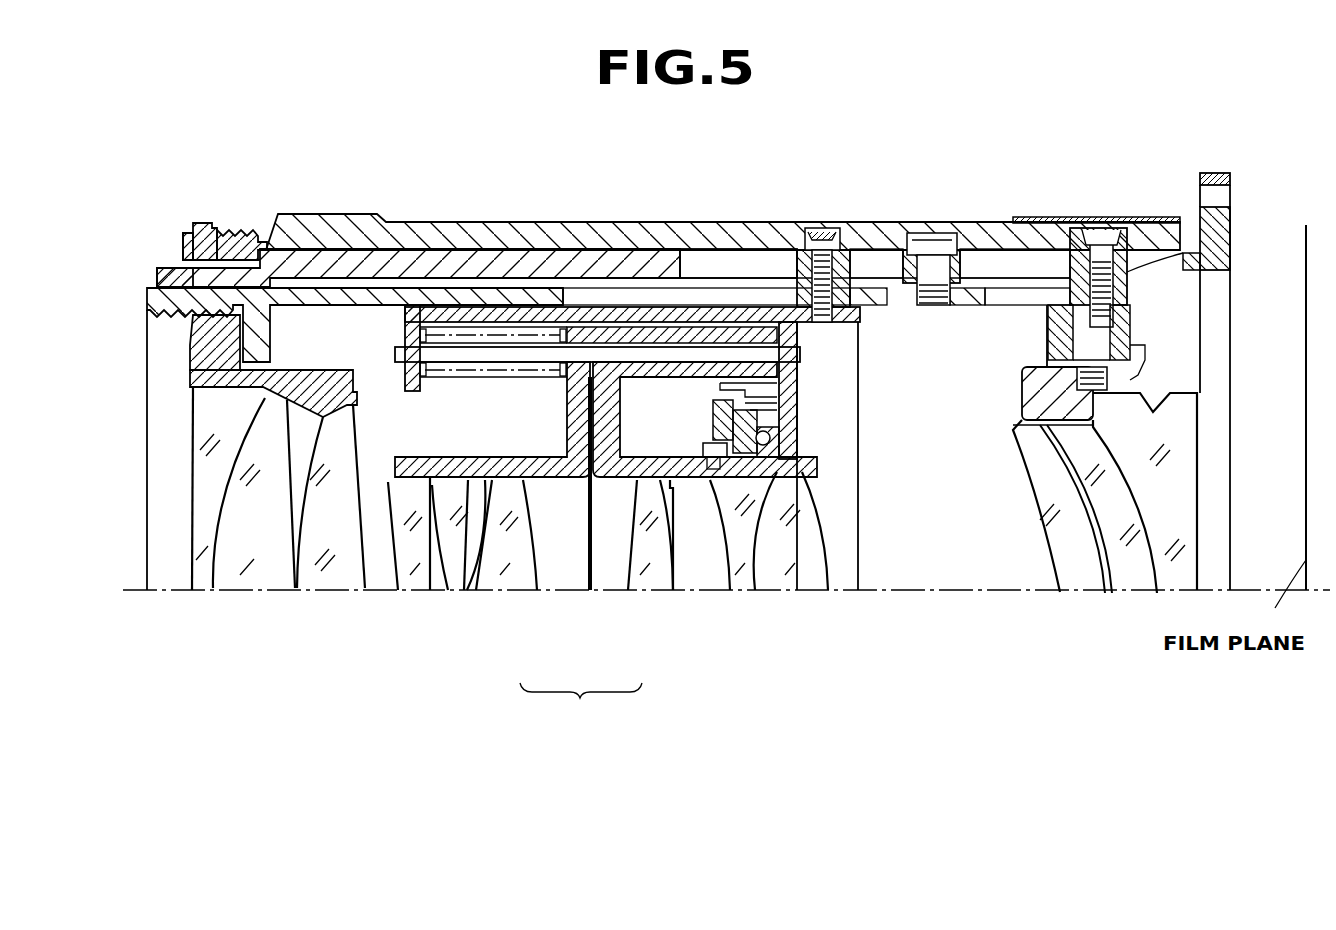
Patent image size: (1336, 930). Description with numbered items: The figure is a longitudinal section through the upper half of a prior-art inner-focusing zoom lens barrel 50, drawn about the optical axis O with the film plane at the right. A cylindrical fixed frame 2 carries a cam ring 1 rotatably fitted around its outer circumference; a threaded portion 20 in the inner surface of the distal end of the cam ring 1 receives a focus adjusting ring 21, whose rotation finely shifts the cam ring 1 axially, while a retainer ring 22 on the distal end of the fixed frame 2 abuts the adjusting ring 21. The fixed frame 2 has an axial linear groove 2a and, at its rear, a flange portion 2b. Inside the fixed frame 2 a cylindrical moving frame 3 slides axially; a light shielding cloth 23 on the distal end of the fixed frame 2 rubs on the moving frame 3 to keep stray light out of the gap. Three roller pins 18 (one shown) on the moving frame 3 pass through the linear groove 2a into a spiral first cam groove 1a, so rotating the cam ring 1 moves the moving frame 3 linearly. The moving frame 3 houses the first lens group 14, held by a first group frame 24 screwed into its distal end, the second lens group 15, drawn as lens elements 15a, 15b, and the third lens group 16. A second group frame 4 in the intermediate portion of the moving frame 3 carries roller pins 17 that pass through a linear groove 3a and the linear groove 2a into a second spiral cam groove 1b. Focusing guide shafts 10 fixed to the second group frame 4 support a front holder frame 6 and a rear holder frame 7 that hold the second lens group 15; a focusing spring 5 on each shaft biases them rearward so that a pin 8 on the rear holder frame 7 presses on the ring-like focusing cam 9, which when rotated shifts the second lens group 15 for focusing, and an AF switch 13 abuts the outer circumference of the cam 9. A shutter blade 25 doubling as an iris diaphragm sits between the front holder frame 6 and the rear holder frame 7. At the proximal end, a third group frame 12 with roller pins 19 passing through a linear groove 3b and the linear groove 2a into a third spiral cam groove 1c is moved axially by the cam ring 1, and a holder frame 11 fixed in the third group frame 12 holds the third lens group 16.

The cam ring 1 is at (350, 224).
The first cam groove 1a is at (948, 222).
The second spiral cam groove 1b is at (810, 224).
The third spiral cam groove 1c is at (1087, 226).
The fixed frame 2 is at (462, 265).
The linear groove 2a is at (704, 255).
The sleeve flange 2b is at (1226, 226).
The moving frame 3 is at (150, 298).
The linear groove 3a is at (597, 298).
The linear groove 3b is at (1012, 300).
The second group frame 4 is at (404, 316).
The focusing spring 5 is at (422, 372).
The front holder frame 6 is at (519, 466).
The rear holder frame 7 is at (656, 470).
The pin 8 is at (712, 445).
The focusing cam 9 is at (775, 440).
The focusing guide shaft 10 is at (800, 340).
The holder frame 11 is at (1040, 402).
The third group frame 12 is at (1140, 346).
The AF switch 13 is at (720, 388).
The first lens group 14 is at (292, 598).
The second lens group 15 is at (581, 701).
The front sub-group of second lens group 15a is at (457, 600).
The rear sub-group of second lens group 15b is at (698, 600).
The third lens group 16 is at (1085, 598).
The roller pin 17 is at (836, 242).
The roller pin 18 is at (928, 275).
The roller pin 19 is at (1106, 250).
The threaded portion 20 is at (247, 240).
The focus adjusting ring 21 is at (201, 222).
The retainer ring 22 is at (185, 240).
The light shielding cloth 23 is at (158, 281).
The first group frame 24 is at (215, 346).
The shutter blade 25 is at (586, 560).
The zoom lens barrel 50 is at (318, 208).
The optical axis O is at (147, 587).